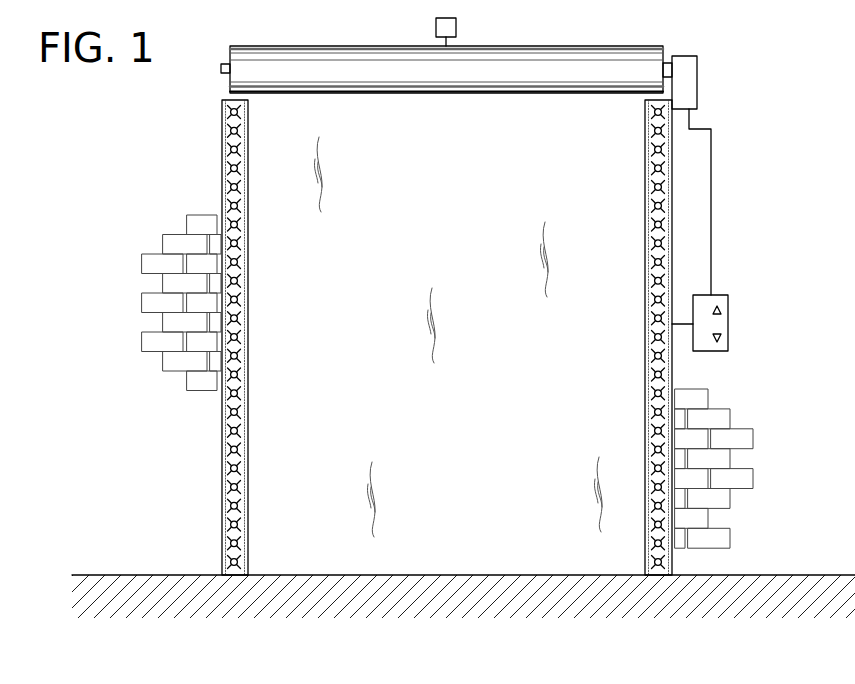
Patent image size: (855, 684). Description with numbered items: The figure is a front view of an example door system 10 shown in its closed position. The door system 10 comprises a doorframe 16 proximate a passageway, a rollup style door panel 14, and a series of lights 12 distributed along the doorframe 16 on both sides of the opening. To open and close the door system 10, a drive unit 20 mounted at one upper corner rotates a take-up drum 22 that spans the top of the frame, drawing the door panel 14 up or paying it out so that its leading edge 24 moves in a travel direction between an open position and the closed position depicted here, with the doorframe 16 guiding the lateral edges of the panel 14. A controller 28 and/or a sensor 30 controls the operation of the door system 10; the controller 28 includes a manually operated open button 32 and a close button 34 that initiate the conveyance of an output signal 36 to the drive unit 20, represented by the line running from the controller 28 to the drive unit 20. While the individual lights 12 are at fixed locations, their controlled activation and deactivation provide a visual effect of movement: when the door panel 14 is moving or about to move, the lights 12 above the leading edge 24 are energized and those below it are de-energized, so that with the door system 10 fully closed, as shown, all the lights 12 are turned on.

The door system 10 is at (130, 165).
The series of lights 12 is at (240, 438).
The door panel 14 is at (273, 504).
The doorframe 16 is at (248, 264).
The drive unit 20 is at (697, 73).
The take-up drum 22 is at (221, 69).
The leading edge 24 is at (515, 575).
The controller 28 is at (734, 326).
The sensor 30 is at (436, 25).
The open button 32 is at (724, 309).
The close button 34 is at (724, 338).
The output signal 36 is at (711, 208).